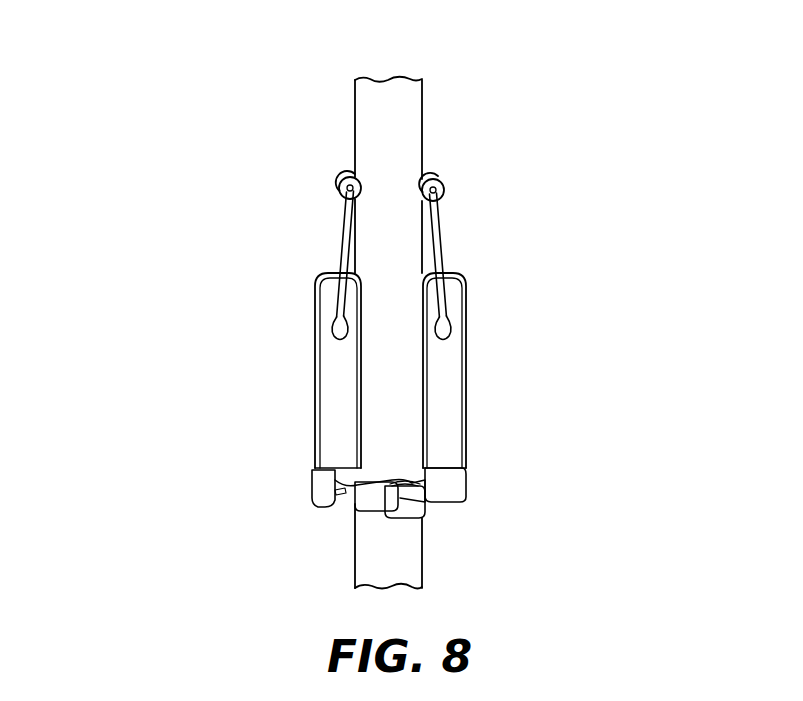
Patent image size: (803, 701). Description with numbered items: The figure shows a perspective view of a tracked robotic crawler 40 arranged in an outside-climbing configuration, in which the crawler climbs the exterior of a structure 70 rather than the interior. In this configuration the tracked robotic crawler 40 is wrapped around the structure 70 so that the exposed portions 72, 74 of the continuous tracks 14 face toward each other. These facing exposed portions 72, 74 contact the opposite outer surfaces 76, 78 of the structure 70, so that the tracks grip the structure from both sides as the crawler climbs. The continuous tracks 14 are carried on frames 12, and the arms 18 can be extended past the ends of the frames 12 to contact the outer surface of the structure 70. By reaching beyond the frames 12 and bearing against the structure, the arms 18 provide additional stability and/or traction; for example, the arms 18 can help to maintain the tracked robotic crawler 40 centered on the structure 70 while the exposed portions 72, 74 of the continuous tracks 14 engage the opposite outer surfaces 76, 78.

The tracked robotic crawler 40 is at (138, 215).
The structure 70 is at (373, 103).
The outer surface 76 is at (353, 150).
The outer surface 78 is at (423, 147).
The arm 18 is at (340, 257).
The continuous track 14 is at (315, 337).
The frame 12 is at (330, 419).
The exposed portion 72 is at (362, 412).
The exposed portion 74 is at (420, 357).